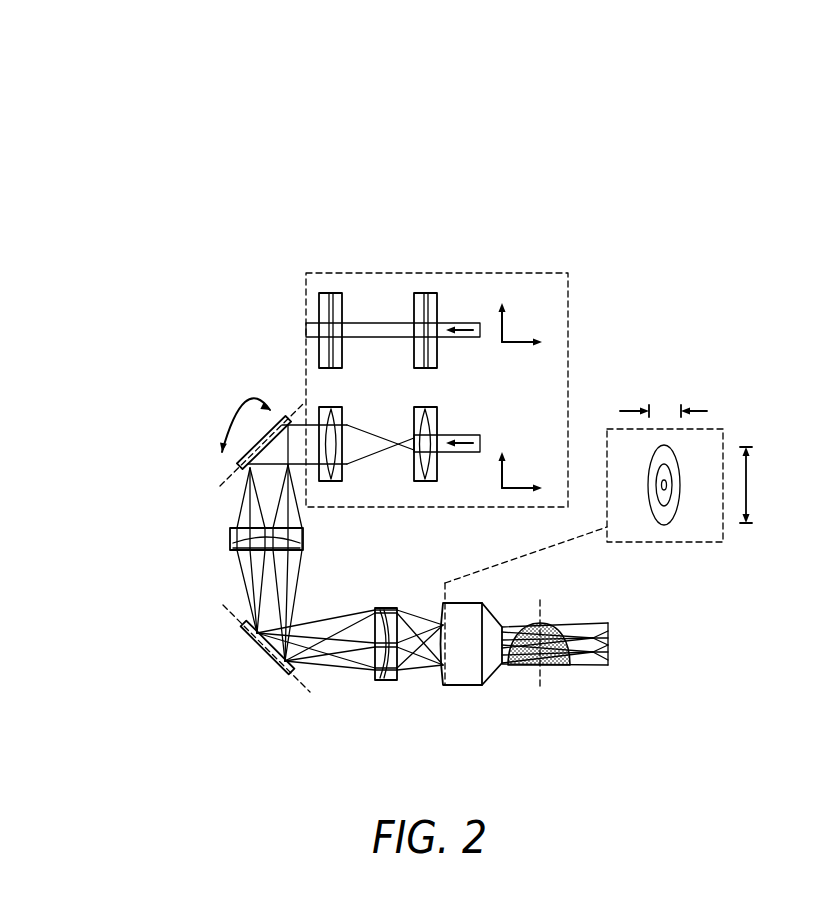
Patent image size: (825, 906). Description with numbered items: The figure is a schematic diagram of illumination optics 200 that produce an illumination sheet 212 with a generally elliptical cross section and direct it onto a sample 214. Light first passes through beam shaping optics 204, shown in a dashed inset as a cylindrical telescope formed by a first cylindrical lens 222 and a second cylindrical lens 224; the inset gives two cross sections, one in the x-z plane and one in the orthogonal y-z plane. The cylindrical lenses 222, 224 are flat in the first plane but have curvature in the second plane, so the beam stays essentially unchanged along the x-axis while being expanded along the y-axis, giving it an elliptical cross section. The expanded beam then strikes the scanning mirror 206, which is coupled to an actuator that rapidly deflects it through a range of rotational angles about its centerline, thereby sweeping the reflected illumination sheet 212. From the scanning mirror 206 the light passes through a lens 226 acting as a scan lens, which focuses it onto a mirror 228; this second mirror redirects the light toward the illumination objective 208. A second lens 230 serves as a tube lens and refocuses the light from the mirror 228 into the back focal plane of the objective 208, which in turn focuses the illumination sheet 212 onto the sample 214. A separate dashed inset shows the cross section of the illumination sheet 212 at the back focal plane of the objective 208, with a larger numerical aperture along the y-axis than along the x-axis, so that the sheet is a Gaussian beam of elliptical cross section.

The illumination optics 200 is at (247, 267).
The beam shaping optics 204 is at (379, 272).
The scanning mirror 206 is at (237, 464).
The illumination objective 208 is at (456, 686).
The illumination sheet 212 is at (677, 508).
The sample 214 is at (547, 624).
The first cylindrical lens 222 is at (424, 368).
The second cylindrical lens 224 is at (330, 368).
The lens 226 is at (229, 532).
The mirror 228 is at (258, 646).
The second lens 230 is at (392, 681).